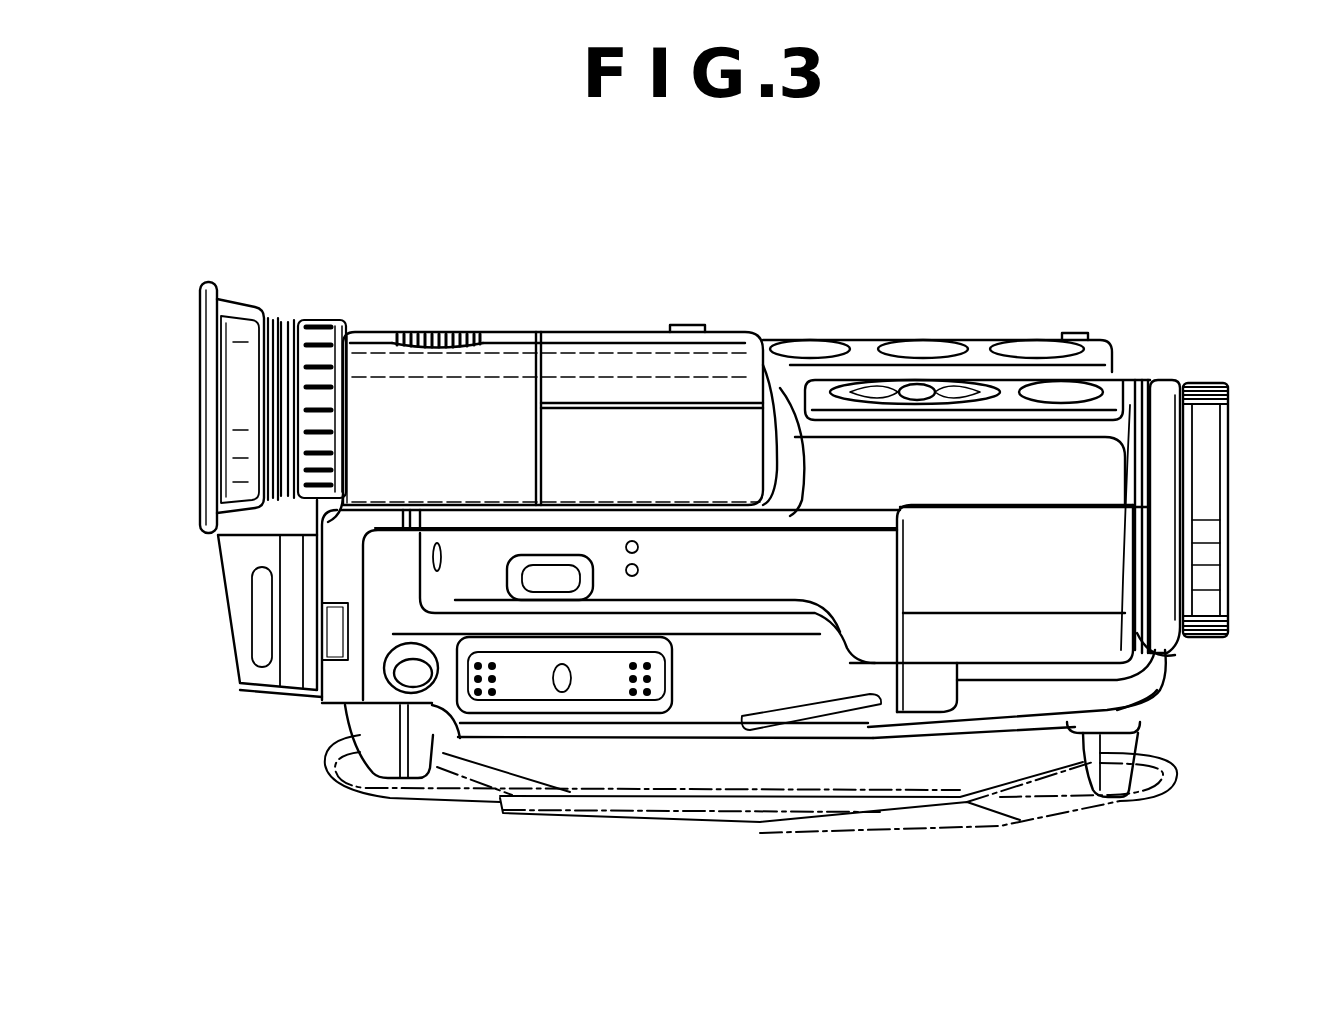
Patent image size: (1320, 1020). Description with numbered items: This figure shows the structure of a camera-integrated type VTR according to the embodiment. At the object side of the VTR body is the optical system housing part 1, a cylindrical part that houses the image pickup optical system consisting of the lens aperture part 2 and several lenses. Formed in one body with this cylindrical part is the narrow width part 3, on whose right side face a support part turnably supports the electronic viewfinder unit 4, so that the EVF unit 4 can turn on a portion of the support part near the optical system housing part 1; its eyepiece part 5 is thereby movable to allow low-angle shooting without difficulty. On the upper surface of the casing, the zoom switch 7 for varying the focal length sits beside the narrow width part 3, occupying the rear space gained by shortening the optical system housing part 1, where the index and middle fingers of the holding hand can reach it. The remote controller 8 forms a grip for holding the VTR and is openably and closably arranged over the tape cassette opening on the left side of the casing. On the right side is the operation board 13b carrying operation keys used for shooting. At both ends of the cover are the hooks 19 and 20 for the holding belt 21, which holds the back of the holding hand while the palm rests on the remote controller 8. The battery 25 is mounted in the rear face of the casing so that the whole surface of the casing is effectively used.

The optical system housing part 1 is at (1033, 483).
The lens aperture part 2 is at (1232, 493).
The narrow width part 3 is at (614, 510).
The electronic viewfinder (EVF) unit 4 is at (511, 365).
The eyepiece part 5 is at (228, 383).
The zoom switch 7 is at (600, 684).
The remote controller 8 is at (933, 737).
The operation board 13b is at (868, 348).
The hook 19 is at (387, 753).
The hook 20 is at (1114, 767).
The holding belt 21 is at (1057, 810).
The battery 25 is at (230, 547).